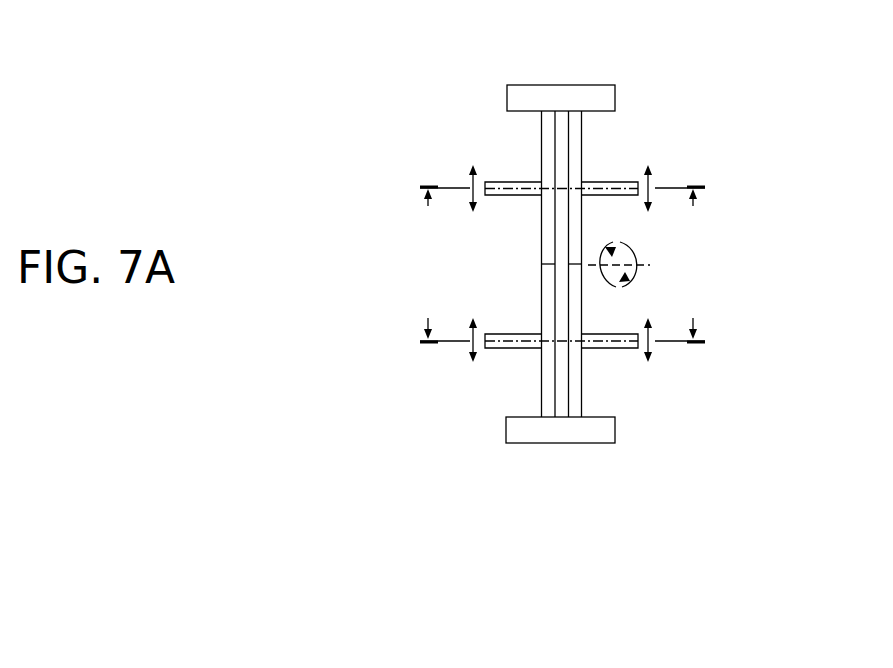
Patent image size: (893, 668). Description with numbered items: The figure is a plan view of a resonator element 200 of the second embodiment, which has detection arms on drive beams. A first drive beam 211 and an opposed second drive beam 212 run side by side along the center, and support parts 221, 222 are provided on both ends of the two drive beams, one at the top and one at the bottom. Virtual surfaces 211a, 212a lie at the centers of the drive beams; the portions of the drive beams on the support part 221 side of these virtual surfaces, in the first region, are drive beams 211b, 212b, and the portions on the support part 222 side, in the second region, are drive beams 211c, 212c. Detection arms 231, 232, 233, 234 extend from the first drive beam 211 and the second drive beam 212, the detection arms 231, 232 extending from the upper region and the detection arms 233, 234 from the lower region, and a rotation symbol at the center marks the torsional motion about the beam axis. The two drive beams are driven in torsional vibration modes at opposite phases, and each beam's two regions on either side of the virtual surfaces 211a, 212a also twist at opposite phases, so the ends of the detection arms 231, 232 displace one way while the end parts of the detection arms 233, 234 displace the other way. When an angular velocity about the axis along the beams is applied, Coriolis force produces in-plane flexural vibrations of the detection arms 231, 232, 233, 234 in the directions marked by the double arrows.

The resonator element 200 is at (476, 60).
The first drive beam 211 is at (783, 100).
The virtual surface 211a is at (575, 263).
The drive beam 211b is at (582, 117).
The drive beam 211c is at (582, 411).
The second drive beam 212 is at (338, 98).
The virtual surface 212a is at (546, 265).
The drive beam 212b is at (541, 116).
The drive beam 212c is at (541, 411).
The support part 221 is at (563, 97).
The support part 222 is at (558, 432).
The detection arm 231 is at (606, 183).
The detection arm 232 is at (515, 183).
The detection arm 233 is at (606, 348).
The detection arm 234 is at (514, 348).